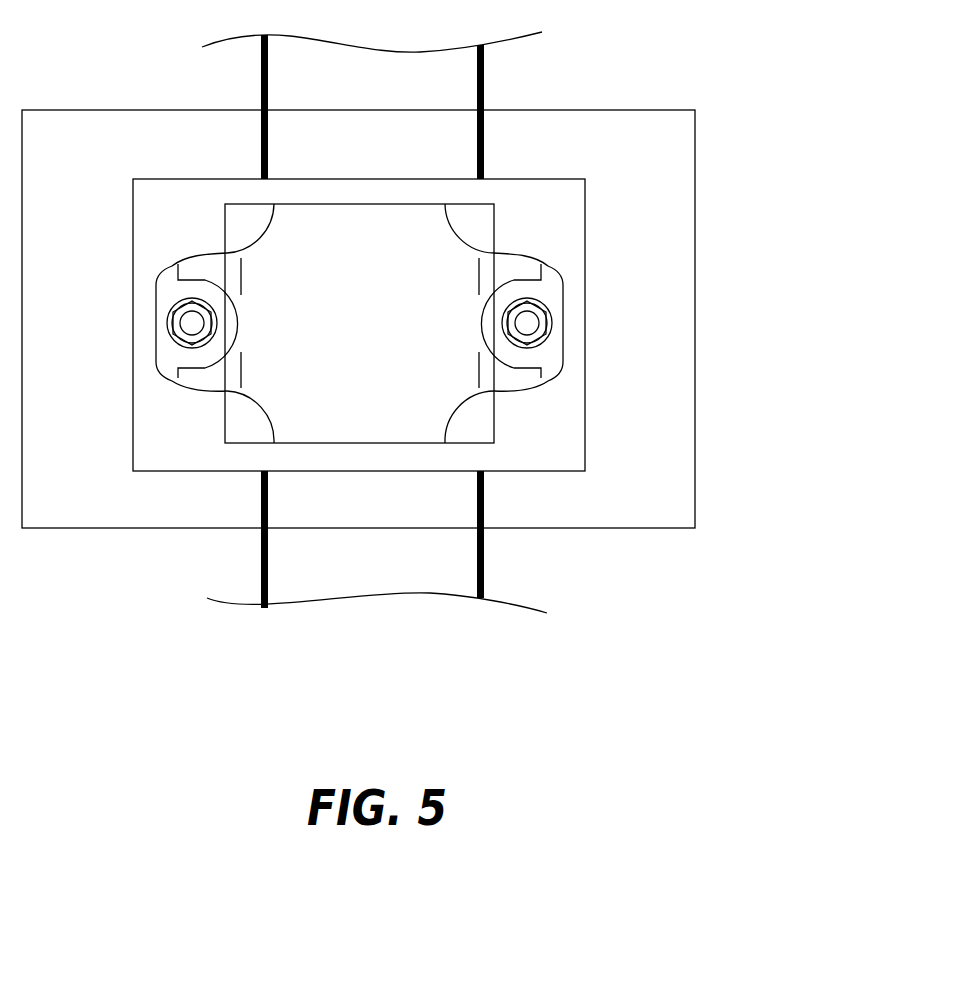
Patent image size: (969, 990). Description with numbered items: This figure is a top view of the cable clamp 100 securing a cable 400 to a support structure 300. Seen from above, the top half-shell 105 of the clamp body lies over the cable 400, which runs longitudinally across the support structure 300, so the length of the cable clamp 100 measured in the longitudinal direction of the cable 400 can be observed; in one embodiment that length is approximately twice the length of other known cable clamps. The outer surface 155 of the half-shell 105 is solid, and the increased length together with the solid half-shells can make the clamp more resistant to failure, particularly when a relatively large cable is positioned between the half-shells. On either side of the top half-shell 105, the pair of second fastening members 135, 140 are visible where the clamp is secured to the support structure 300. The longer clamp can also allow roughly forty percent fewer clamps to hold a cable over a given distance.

The cable clamp 100 is at (646, 93).
The top half-shell 105 is at (337, 421).
The second fastening member 135 is at (548, 322).
The second fastening member 140 is at (175, 323).
The outer surface 155 is at (302, 272).
The support surface 300 is at (667, 218).
The cable 400 is at (430, 118).